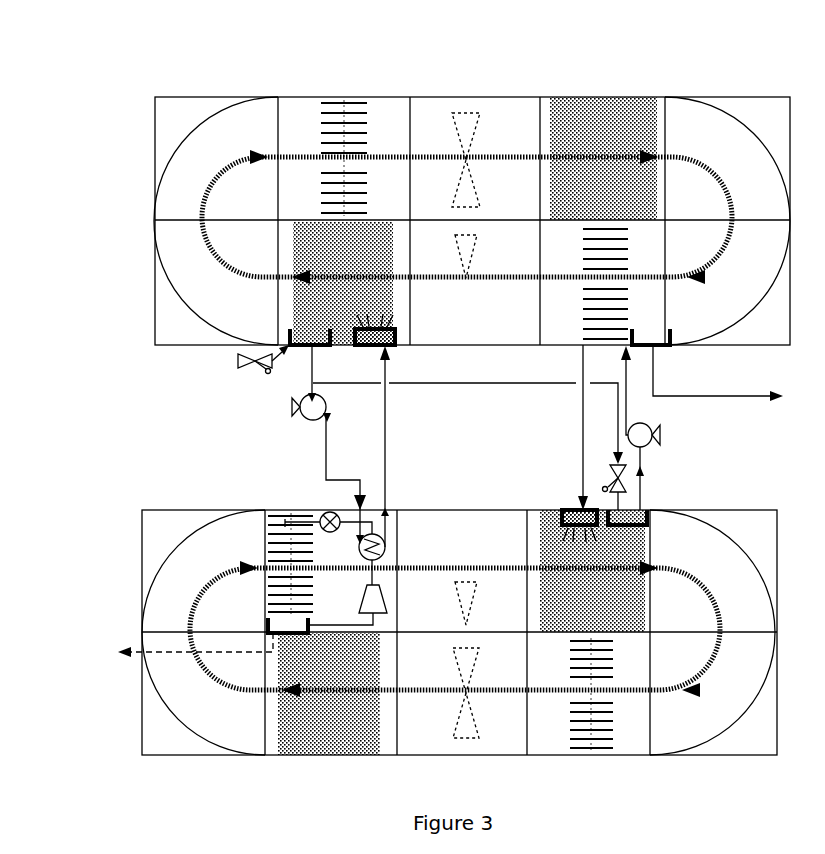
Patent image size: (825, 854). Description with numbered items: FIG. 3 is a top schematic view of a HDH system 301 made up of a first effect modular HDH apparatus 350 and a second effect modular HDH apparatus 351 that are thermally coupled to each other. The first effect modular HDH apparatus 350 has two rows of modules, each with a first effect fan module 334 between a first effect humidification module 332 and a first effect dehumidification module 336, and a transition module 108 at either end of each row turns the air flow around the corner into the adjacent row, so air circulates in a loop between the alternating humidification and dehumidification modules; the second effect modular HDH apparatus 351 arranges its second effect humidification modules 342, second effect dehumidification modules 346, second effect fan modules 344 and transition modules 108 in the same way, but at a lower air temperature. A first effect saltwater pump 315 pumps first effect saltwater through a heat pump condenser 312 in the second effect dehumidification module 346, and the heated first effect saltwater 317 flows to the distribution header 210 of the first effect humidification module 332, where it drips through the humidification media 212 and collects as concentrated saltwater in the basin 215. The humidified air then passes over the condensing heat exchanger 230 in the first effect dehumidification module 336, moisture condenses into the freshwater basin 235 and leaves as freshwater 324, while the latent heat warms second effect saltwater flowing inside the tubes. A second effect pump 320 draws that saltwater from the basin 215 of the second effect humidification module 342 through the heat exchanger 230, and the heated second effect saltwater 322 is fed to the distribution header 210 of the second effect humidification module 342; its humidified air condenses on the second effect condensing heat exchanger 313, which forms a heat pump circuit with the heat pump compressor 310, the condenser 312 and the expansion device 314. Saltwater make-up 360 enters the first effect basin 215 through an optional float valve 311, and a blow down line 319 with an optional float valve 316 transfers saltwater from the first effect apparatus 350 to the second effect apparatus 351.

The HDH system 301 is at (68, 80).
The transition module 108 is at (155, 230).
The first effect humidification module 332 is at (283, 230).
The humidification media 212 is at (377, 228).
The first effect fan module 334 is at (430, 233).
The first effect dehumidification module 336 is at (552, 232).
The condensing heat exchanger 230 is at (613, 230).
The first effect modular HDH apparatus 350 is at (137, 218).
The saltwater make-up 360 is at (238, 361).
The float valve 311 is at (243, 363).
The basin 215 is at (300, 348).
The first effect saltwater pump 315 is at (295, 408).
The expansion device 314 is at (318, 528).
The second effect condensing heat exchanger 313 is at (283, 512).
The distribution header 210 is at (395, 348).
The heated second effect saltwater 322 is at (582, 363).
The blow down line 319 is at (518, 383).
The float valve 316 is at (600, 465).
The heated first effect saltwater 317 is at (400, 468).
The heat pump condenser 312 is at (388, 540).
The heat pump compressor 310 is at (390, 598).
The freshwater basin 235 is at (655, 348).
The second effect pump 320 is at (658, 435).
The freshwater 324 is at (772, 400).
The second effect modular HDH apparatus 351 is at (142, 728).
The second effect dehumidification module 346 is at (322, 628).
The second effect fan module 344 is at (432, 630).
The second effect humidification module 342 is at (535, 627).